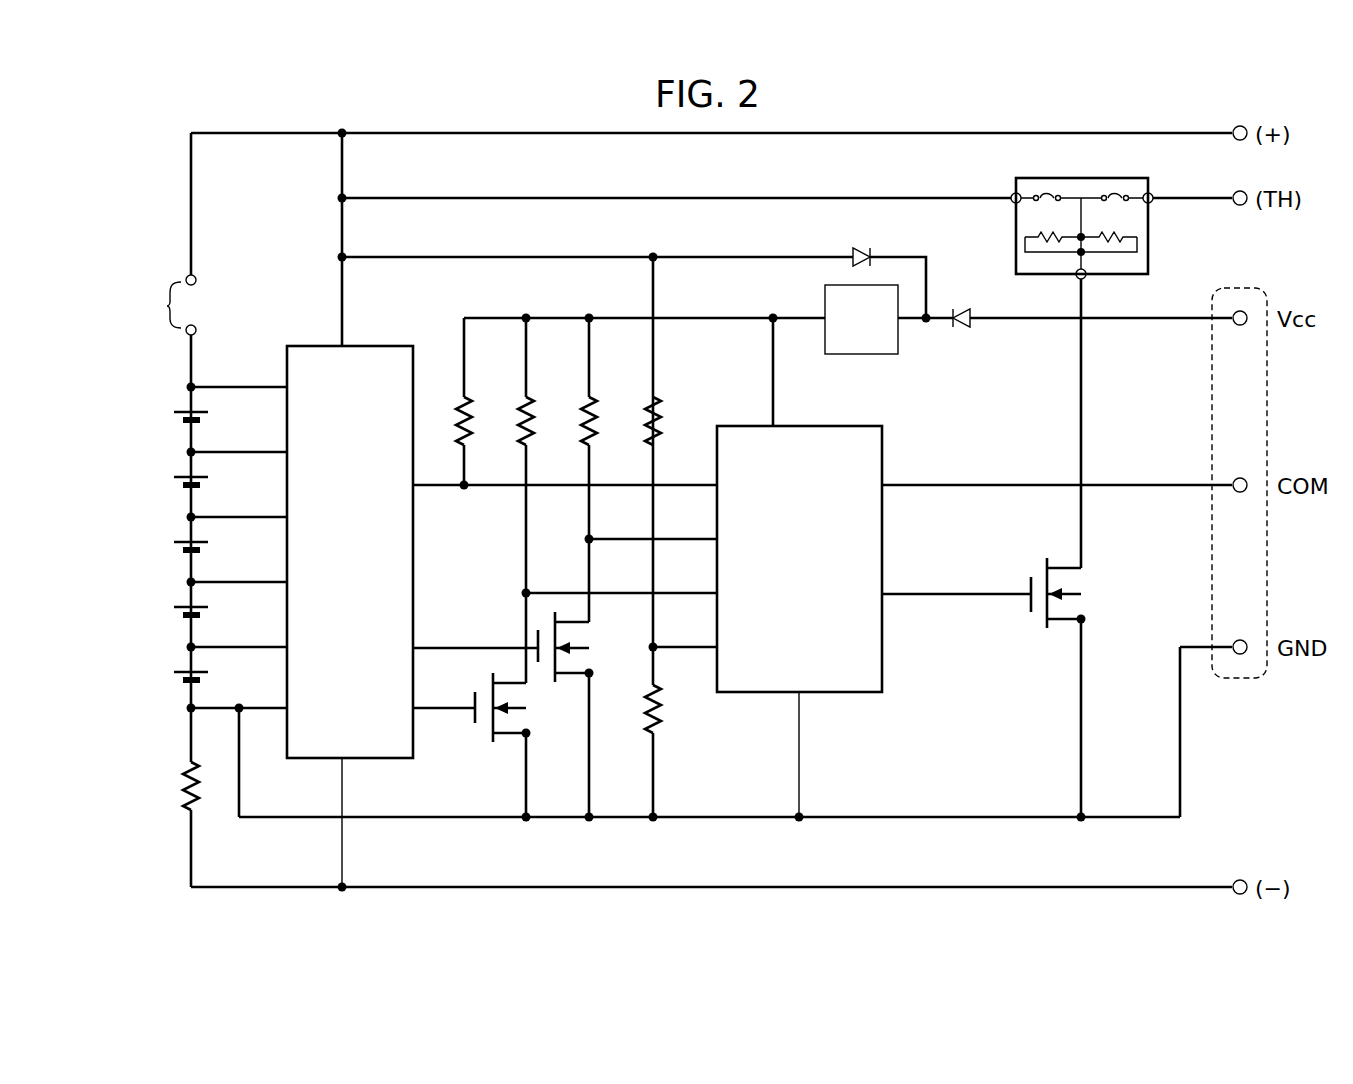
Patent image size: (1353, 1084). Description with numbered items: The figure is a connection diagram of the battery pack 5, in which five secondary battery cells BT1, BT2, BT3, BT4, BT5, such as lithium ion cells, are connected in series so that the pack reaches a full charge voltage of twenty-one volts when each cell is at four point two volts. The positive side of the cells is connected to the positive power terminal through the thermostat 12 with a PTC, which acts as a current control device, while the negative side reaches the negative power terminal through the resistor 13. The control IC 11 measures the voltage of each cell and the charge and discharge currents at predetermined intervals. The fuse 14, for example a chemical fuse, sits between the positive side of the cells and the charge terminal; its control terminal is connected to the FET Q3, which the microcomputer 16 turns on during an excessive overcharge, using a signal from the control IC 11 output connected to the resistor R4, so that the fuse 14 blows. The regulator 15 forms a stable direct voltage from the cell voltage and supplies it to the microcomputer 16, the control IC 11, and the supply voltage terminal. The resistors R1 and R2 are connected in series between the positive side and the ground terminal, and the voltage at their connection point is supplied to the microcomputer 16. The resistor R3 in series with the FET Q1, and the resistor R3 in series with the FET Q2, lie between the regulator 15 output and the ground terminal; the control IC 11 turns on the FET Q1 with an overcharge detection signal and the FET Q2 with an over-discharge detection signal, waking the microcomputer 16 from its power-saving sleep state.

The battery pack 5 is at (946, 106).
The control IC 11 is at (287, 364).
The thermostat 12 is at (169, 301).
The resistor 13 is at (178, 778).
The fuse 14 is at (1105, 178).
The regulator 15 is at (878, 355).
The microcomputer 16 is at (882, 452).
The battery cell BT1 is at (178, 412).
The battery cell BT2 is at (178, 477).
The battery cell BT3 is at (178, 542).
The battery cell BT4 is at (178, 607).
The battery cell BT5 is at (178, 672).
The resistor R1 is at (645, 413).
The resistor R2 is at (662, 712).
The resistor R3 is at (581, 413).
The resistor R4 is at (518, 413).
The FET Q1 is at (592, 650).
The FET Q2 is at (528, 710).
The FET Q3 is at (1083, 596).